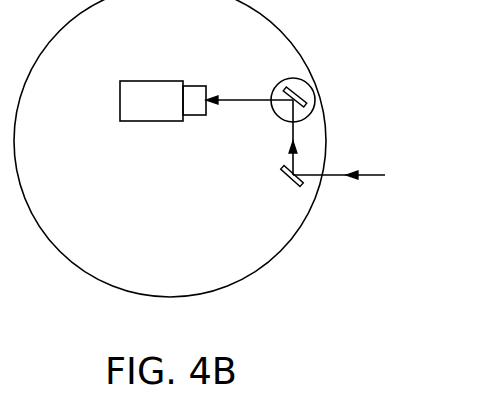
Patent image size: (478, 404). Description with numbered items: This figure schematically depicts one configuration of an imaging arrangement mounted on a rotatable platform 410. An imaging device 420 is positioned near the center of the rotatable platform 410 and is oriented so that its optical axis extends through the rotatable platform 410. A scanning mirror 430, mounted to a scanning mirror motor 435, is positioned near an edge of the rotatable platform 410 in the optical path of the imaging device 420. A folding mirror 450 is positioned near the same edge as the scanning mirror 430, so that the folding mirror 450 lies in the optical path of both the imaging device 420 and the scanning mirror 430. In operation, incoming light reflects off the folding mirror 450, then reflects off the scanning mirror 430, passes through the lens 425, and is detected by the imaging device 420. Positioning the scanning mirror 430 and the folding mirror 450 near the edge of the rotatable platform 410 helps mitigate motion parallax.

The rotatable platform 410 is at (88, 265).
The imaging device 420 is at (152, 88).
The lens 425 is at (195, 92).
The scanning mirror 430 is at (304, 88).
The scanning mirror motor 435 is at (284, 110).
The folding mirror 450 is at (284, 181).